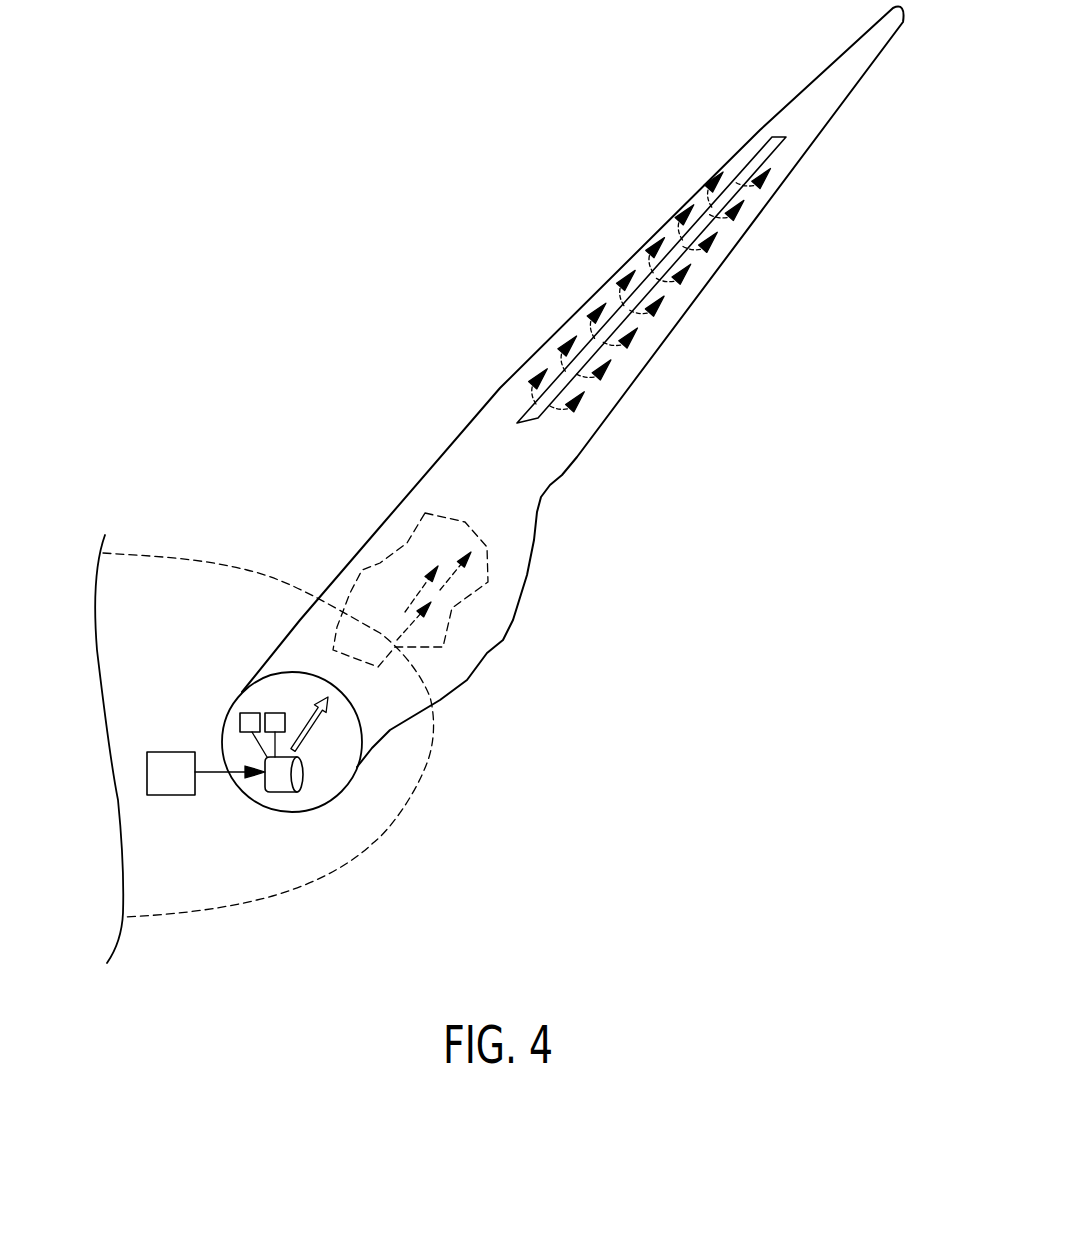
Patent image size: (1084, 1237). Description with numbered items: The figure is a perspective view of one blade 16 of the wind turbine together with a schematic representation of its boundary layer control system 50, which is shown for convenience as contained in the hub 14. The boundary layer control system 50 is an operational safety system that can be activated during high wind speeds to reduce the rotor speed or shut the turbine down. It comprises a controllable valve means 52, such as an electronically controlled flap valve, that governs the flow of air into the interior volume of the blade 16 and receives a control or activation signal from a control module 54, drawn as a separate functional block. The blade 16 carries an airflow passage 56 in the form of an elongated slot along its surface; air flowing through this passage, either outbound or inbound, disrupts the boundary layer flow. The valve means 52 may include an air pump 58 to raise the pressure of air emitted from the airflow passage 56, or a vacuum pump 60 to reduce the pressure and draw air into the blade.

The hub 14 is at (198, 557).
The blade 16 is at (530, 506).
The boundary layer control system 50 is at (474, 800).
The valve means 52 is at (280, 785).
The control module 54 is at (172, 787).
The airflow passage 56 is at (650, 283).
The air pump 58 is at (240, 722).
The vacuum pump 60 is at (273, 713).